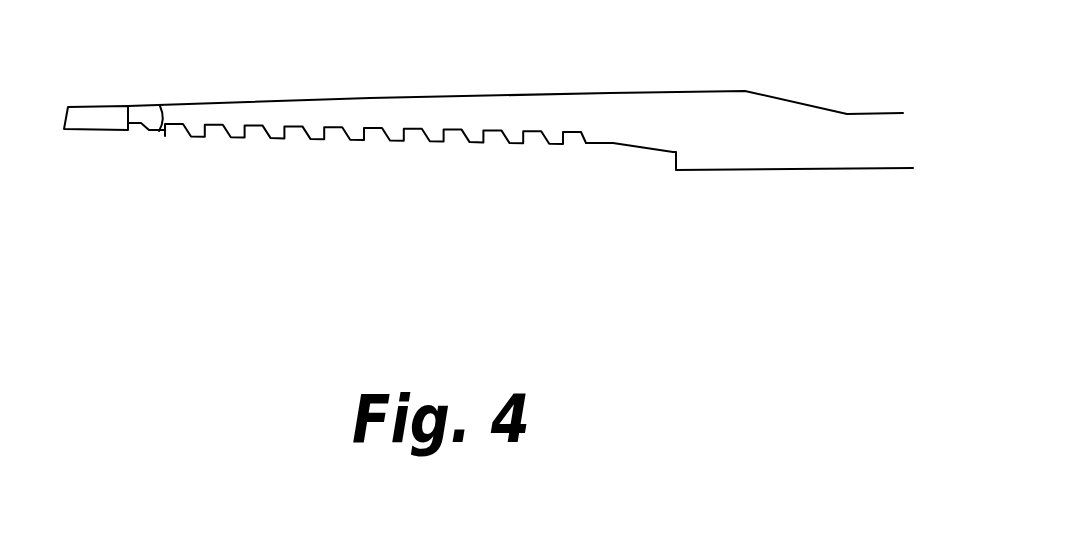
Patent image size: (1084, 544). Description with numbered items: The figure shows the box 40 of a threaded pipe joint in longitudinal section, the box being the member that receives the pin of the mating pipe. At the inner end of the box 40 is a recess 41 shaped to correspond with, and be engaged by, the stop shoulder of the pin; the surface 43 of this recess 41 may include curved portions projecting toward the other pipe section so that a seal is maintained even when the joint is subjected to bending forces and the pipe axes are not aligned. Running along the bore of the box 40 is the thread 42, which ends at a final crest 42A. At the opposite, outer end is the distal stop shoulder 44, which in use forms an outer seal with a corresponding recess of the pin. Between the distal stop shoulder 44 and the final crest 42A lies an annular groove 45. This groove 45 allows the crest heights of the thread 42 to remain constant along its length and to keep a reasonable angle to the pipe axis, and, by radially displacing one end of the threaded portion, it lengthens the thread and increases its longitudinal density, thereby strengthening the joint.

The box 40 is at (317, 200).
The recess 41 is at (672, 165).
The thread 42 is at (571, 147).
The final crest 42A is at (172, 120).
The surface of the recess 43 is at (625, 153).
The distal stop shoulder 44 is at (103, 105).
The annular groove 45 is at (138, 135).